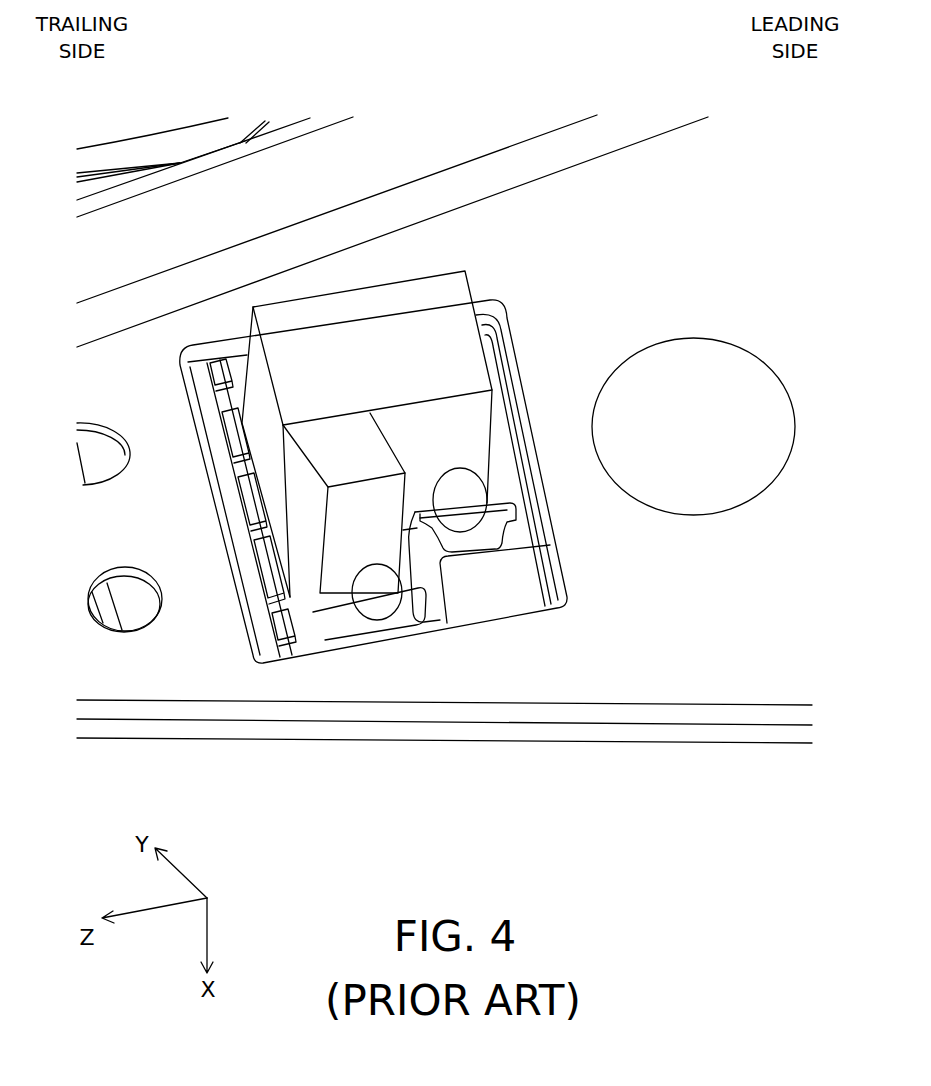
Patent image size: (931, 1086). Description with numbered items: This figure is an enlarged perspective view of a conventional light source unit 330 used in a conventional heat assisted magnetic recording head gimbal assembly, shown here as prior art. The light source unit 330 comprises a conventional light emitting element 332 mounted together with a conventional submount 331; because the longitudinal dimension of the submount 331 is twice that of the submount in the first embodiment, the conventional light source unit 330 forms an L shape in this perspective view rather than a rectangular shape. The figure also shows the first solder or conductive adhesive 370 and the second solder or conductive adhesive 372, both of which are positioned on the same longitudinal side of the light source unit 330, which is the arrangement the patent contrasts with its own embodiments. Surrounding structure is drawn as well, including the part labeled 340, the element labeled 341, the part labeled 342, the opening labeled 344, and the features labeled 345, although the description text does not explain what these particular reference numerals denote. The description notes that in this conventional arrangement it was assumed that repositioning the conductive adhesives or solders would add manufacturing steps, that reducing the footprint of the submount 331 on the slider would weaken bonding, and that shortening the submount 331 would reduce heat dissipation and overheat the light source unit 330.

The light source unit 330 is at (400, 262).
The submount 331 is at (362, 373).
The light emitting element 332 is at (346, 526).
The mounting frame 340 is at (692, 273).
The retention clip 341 is at (523, 532).
The frame rail 342 is at (155, 525).
The frame opening 344 is at (682, 434).
The retention tabs 345 is at (410, 615).
The first solder or conductive adhesive 370 is at (443, 499).
The second solder or conductive adhesive 372 is at (368, 616).